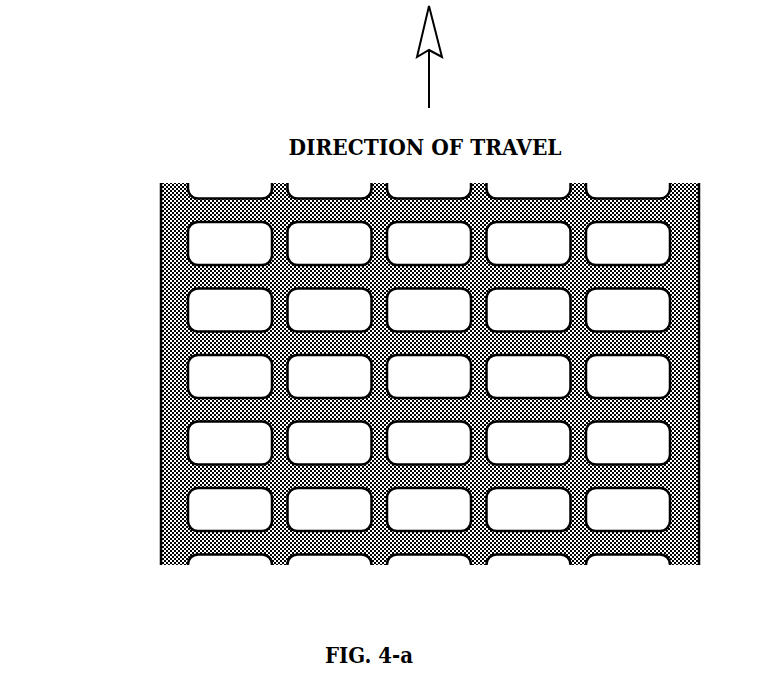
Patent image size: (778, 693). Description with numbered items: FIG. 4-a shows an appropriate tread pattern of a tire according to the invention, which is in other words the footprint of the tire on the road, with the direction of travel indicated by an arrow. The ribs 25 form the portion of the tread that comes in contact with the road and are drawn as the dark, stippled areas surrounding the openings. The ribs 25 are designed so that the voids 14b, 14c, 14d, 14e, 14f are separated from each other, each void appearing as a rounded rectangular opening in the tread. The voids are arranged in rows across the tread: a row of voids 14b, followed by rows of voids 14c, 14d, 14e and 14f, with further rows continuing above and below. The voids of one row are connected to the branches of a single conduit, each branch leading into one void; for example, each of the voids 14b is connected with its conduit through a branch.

The ribs 25 is at (225, 279).
The voids 14b is at (429, 243).
The voids 14c is at (429, 310).
The voids 14d is at (429, 376).
The voids 14e is at (429, 443).
The voids 14f is at (429, 509).